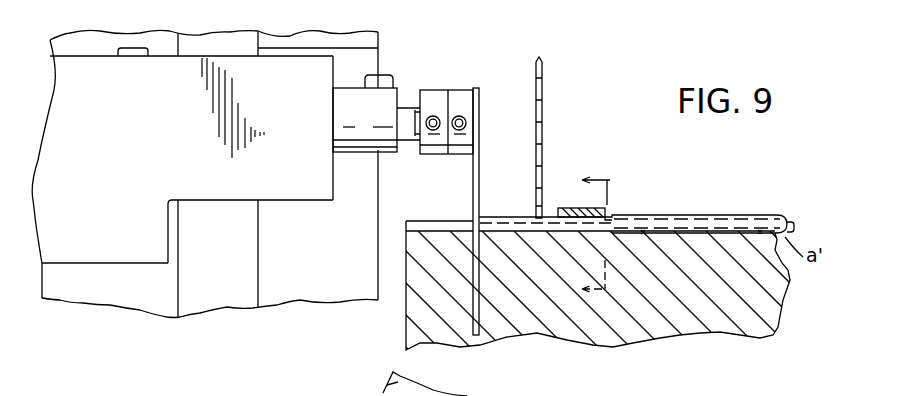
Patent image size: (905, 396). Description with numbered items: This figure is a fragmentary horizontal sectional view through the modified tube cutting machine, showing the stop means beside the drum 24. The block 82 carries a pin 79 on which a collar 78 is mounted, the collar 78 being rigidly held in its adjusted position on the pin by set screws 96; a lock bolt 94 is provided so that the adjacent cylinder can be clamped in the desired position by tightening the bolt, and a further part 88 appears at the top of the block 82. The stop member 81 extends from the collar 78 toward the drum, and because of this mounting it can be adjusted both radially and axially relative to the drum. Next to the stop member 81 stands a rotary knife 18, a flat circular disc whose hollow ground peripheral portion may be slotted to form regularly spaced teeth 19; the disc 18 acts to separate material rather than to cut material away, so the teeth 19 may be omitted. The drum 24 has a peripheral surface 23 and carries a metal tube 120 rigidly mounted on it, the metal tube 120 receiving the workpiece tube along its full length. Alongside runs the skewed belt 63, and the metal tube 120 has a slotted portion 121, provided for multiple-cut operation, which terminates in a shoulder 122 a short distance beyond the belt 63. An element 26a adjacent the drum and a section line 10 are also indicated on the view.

The cap 88 is at (135, 48).
The block 82 is at (272, 193).
The lock bolt 94 is at (392, 80).
The pin 79 is at (412, 120).
The set screws 96 is at (435, 116).
The collar 78 is at (480, 100).
The stop member 81 is at (476, 173).
The rotary knife 18 is at (543, 72).
The base top surface 26a is at (441, 228).
The slotted portion 121 is at (553, 212).
The section line 10 is at (598, 237).
The skewed belt 63 is at (588, 209).
The shoulder 122 is at (612, 212).
The peripheral surface 23 is at (707, 228).
The metal tube 120 is at (735, 213).
The drum 24 is at (719, 330).
The teeth 19 is at (378, 395).